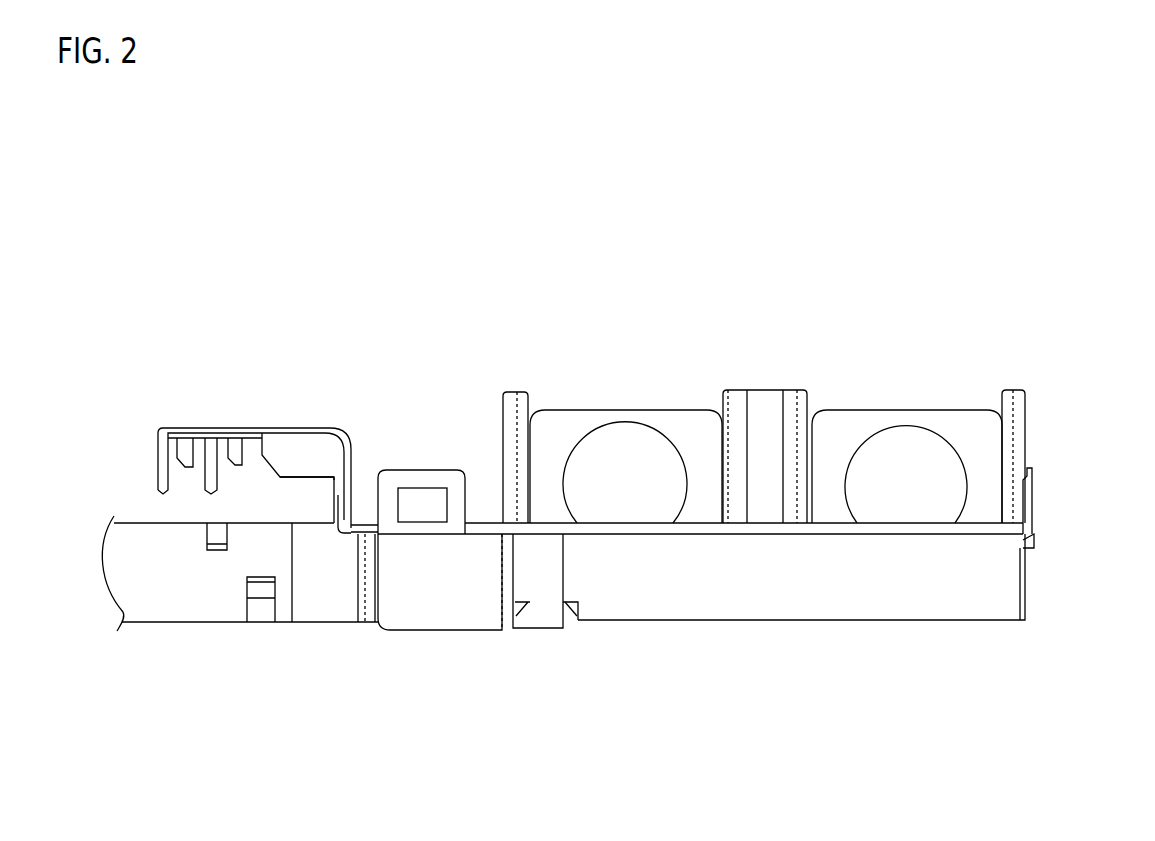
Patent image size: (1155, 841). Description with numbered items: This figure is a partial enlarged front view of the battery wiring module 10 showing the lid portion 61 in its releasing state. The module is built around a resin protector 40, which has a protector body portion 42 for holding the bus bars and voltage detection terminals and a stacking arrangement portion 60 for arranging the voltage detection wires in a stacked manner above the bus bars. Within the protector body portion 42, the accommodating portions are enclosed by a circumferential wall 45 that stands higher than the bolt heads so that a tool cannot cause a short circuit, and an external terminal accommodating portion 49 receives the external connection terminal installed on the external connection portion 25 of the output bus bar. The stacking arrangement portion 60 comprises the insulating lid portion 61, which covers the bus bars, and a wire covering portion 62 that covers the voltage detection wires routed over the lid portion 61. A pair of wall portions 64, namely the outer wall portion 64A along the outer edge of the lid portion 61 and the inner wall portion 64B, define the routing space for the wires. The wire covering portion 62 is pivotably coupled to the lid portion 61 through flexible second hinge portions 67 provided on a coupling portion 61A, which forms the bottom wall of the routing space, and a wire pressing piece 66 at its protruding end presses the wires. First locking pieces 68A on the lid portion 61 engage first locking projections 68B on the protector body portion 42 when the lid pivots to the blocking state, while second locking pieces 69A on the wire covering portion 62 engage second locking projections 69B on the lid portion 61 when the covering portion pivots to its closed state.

The connector 10 is at (222, 222).
The external connection portion 25 is at (851, 428).
The resin protector 40 is at (160, 607).
The protector body portion 42 is at (212, 600).
The circumferential wall 45 is at (797, 578).
The external terminal accommodating portion 49 is at (1020, 410).
The stacking arrangement portion 60 is at (921, 527).
The lid portion 61 is at (681, 527).
The coupling portion 61A is at (421, 530).
The wire covering portion 62 is at (254, 430).
The wall portions 64 is at (410, 615).
The outer wall portion 64A is at (342, 497).
The inner wall portion 64B is at (508, 567).
The wire pressing piece 66 is at (314, 447).
The second hinge portions 67 is at (357, 538).
The first locking pieces 68A is at (418, 483).
The first locking projections 68B is at (1036, 541).
The second locking pieces 69A is at (208, 483).
The second locking projections 69B is at (566, 600).